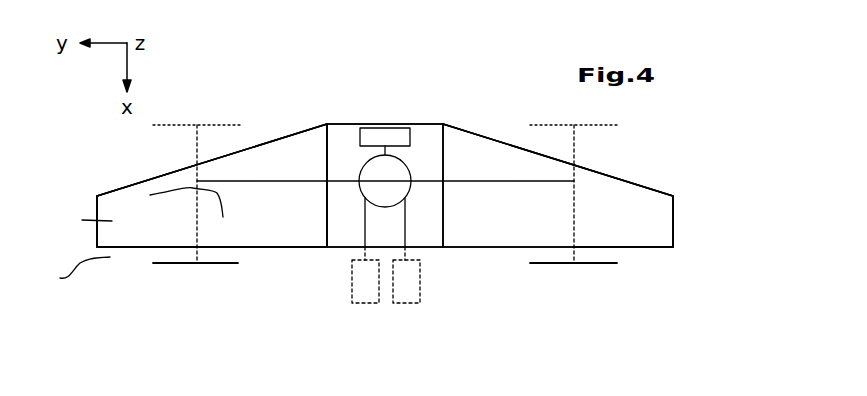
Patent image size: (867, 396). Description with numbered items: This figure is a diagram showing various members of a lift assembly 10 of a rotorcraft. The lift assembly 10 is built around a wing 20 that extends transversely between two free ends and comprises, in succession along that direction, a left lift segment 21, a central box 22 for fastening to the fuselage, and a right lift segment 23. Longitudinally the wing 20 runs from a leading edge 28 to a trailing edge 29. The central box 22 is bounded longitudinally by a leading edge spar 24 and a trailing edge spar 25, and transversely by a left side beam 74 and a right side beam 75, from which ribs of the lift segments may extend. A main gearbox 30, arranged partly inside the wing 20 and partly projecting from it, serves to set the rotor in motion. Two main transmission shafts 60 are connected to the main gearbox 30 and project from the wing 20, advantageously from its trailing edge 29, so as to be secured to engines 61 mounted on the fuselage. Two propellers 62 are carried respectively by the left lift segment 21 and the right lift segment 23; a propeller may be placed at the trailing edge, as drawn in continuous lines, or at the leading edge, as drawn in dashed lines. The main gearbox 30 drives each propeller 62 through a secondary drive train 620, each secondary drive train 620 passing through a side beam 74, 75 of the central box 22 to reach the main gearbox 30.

The lift assembly 10 is at (665, 279).
The wing 20 is at (676, 221).
The left lift segment 21 is at (98, 220).
The central box 22 is at (430, 135).
The right lift segment 23 is at (635, 204).
The leading edge spar 24 is at (551, 164).
The trailing edge spar 25 is at (485, 250).
The leading edge 28 is at (236, 133).
The trailing edge 29 is at (285, 249).
The main gearbox 30 is at (377, 165).
The main transmission shaft 60 is at (363, 228).
The engine 61 is at (372, 305).
The propeller 62 is at (187, 271).
The left side beam 74 is at (327, 152).
The right side beam 75 is at (443, 150).
The secondary drive train 620 is at (225, 180).